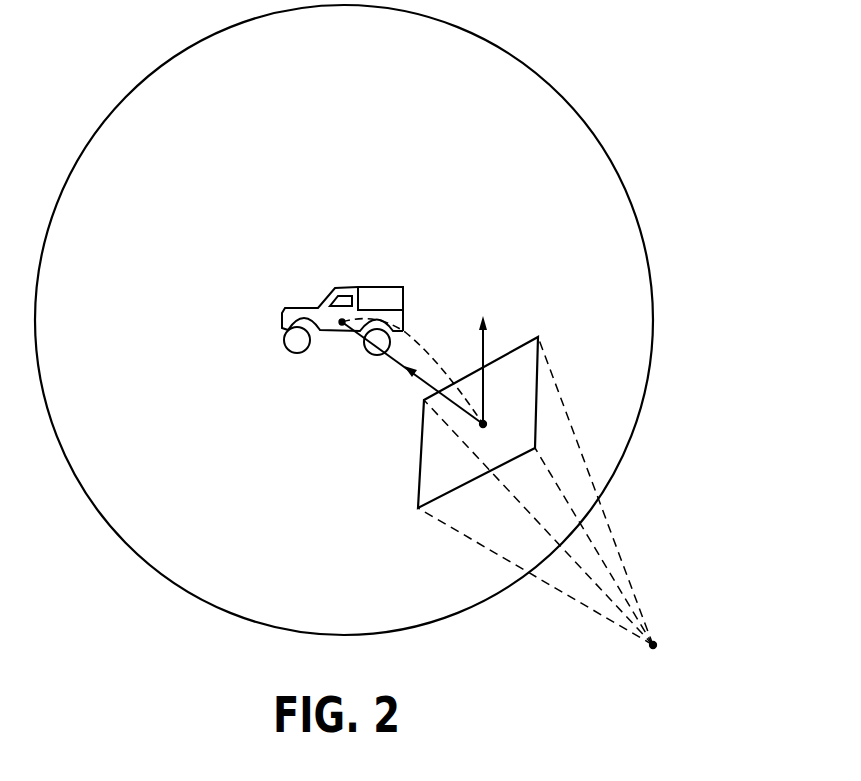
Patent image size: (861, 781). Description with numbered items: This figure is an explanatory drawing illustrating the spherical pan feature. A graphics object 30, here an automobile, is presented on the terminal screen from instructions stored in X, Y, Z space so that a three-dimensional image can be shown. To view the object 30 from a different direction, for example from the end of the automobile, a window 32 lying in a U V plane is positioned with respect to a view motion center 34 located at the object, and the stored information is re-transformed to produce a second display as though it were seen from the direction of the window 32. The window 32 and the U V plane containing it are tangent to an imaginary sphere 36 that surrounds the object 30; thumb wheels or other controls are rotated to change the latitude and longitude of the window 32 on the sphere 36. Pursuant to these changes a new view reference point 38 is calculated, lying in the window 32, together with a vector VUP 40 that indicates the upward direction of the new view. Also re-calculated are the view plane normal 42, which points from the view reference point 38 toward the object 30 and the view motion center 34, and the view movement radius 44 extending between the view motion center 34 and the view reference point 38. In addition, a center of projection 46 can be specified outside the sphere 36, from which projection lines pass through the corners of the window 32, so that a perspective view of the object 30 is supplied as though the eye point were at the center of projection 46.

The graphics object 30 is at (362, 285).
The window 32 is at (422, 470).
The view motion center 34 is at (340, 324).
The imaginary sphere 36 is at (566, 100).
The view reference point 38 is at (477, 498).
The VUP vector 40 is at (520, 324).
The view plane normal 42 is at (412, 376).
The view movement radius 44 is at (434, 345).
The center of projection 46 is at (656, 642).